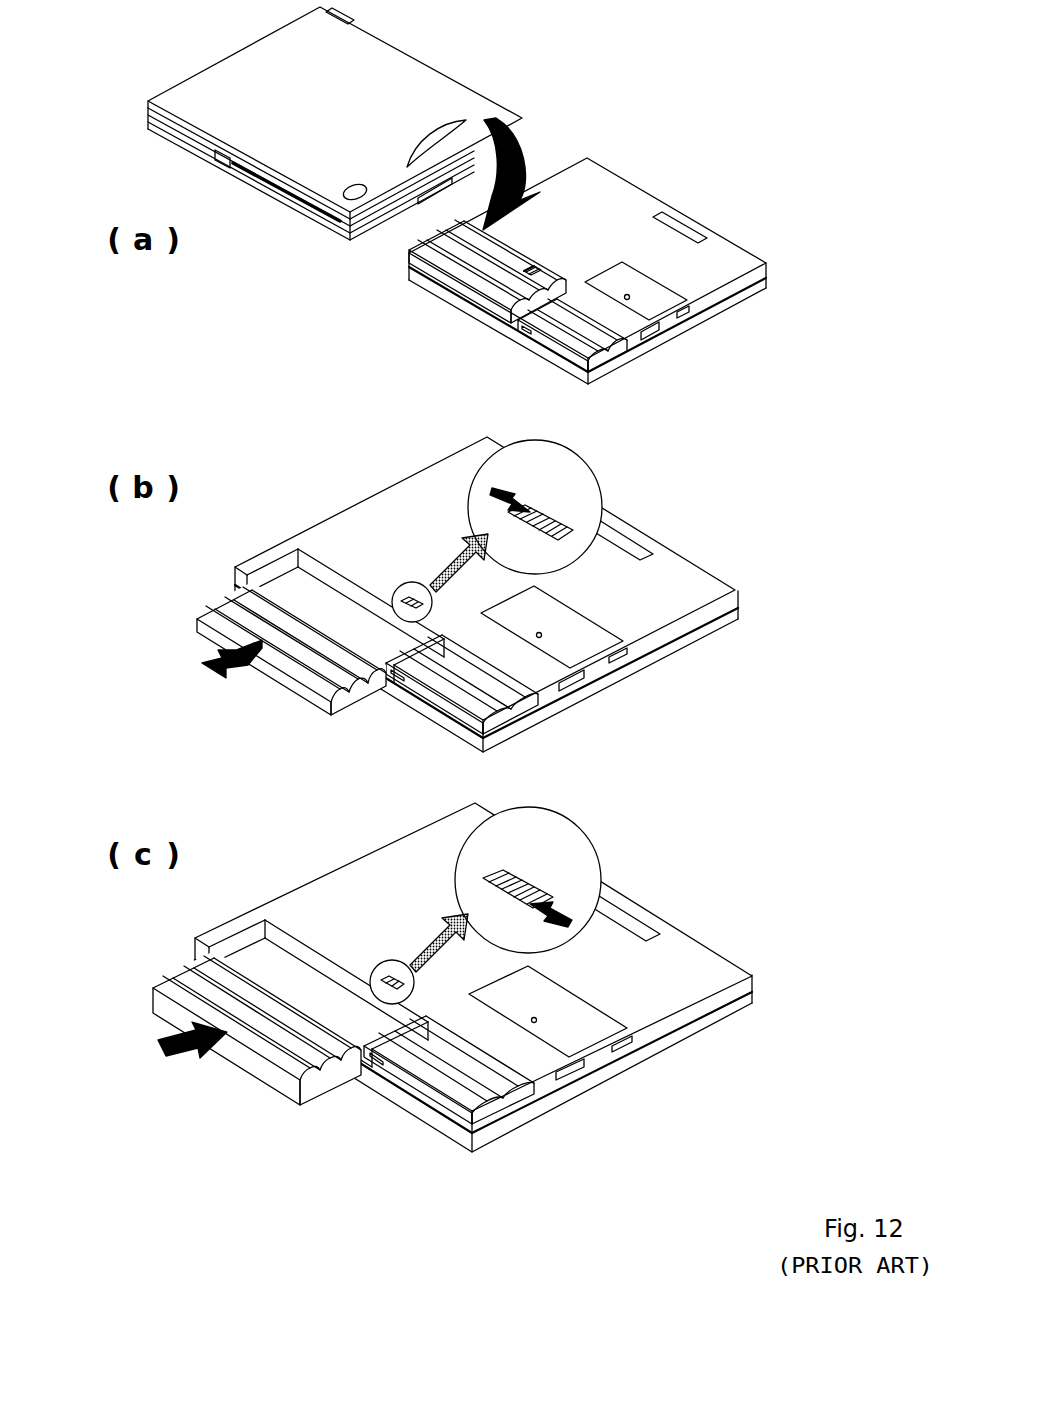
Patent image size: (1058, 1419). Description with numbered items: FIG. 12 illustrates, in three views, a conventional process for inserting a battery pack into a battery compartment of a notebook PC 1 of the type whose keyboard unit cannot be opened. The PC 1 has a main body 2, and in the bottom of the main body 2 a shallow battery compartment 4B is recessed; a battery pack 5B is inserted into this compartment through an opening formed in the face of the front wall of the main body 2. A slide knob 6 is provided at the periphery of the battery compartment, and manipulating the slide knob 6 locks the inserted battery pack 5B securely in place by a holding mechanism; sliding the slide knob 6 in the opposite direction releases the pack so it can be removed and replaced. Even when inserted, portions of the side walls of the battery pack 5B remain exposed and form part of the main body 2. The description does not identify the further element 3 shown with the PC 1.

The PC 1 is at (120, 168).
The main body 2 is at (173, 135).
The display lid 3 is at (203, 83).
The battery accommodating cavity 4B is at (350, 597).
The battery pack 5B is at (470, 282).
The slide knob 6 is at (533, 273).